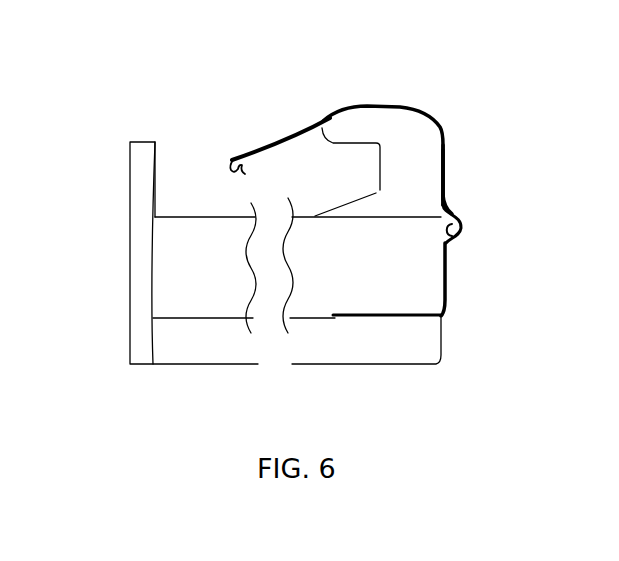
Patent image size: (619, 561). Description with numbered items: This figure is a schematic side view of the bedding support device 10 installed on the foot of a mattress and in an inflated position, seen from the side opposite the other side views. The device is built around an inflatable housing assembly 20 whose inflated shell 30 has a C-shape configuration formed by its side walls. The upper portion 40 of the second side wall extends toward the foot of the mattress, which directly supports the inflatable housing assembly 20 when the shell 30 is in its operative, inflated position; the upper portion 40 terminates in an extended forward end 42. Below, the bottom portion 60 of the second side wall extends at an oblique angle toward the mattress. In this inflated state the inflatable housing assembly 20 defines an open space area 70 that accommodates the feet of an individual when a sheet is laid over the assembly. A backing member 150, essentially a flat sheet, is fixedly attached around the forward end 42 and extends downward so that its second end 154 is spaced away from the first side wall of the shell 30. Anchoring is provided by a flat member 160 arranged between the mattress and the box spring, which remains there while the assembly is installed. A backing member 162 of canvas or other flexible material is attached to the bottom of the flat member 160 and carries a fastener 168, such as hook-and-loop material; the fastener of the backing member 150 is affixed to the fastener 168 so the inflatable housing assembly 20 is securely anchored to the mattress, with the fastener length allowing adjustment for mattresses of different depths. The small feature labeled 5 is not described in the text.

The bedding support device 10 is at (466, 96).
The inflatable housing assembly 20 is at (431, 70).
The shell 30 is at (428, 157).
The upper portion 40 is at (323, 132).
The lip tip 5 is at (246, 172).
The forward end 42 is at (326, 147).
The bottom portion 60 is at (378, 192).
The open space area 70 is at (403, 190).
The backing member 150 is at (452, 203).
The second end 154 is at (463, 228).
The fastener 168 is at (453, 238).
The backing member 162 is at (445, 303).
The flat member 160 is at (400, 349).